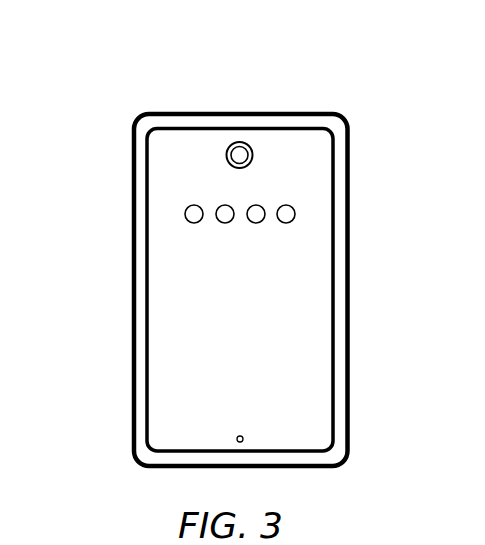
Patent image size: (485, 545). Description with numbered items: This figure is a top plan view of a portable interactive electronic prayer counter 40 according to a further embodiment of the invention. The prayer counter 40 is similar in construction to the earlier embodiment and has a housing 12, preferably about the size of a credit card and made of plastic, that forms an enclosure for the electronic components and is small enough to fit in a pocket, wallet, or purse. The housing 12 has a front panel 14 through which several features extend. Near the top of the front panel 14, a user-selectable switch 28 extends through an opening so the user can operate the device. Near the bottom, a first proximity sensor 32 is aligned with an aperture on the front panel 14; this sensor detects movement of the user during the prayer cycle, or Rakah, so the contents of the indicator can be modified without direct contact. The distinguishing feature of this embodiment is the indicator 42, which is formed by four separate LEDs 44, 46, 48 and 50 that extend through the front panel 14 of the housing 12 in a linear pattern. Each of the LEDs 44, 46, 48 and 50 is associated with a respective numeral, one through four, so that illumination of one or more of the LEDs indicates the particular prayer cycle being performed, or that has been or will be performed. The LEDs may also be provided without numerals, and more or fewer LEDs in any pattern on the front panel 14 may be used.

The portable interactive electronic prayer counter 40 is at (222, 269).
The housing 12 is at (127, 325).
The front panel 14 is at (308, 313).
The user-selectable switch 28 is at (240, 152).
The first proximity sensor 32 is at (240, 436).
The indicator 42 is at (220, 208).
The LED 44 is at (193, 209).
The LED 46 is at (226, 210).
The LED 48 is at (256, 210).
The LED 50 is at (290, 210).